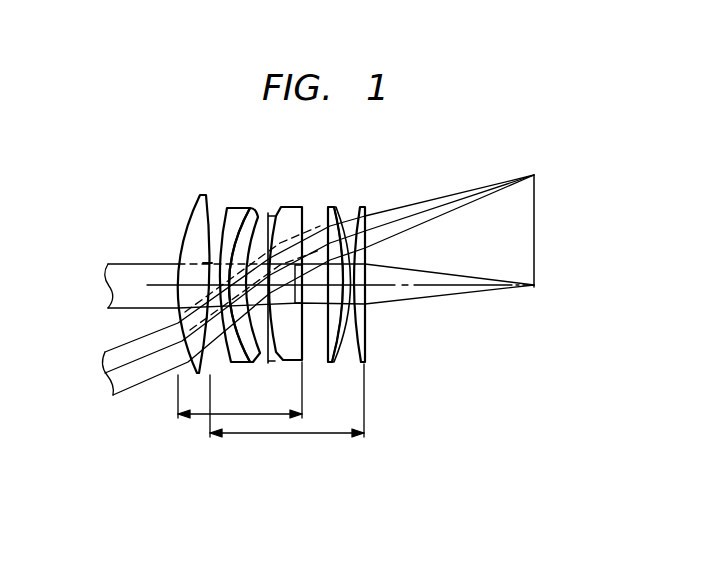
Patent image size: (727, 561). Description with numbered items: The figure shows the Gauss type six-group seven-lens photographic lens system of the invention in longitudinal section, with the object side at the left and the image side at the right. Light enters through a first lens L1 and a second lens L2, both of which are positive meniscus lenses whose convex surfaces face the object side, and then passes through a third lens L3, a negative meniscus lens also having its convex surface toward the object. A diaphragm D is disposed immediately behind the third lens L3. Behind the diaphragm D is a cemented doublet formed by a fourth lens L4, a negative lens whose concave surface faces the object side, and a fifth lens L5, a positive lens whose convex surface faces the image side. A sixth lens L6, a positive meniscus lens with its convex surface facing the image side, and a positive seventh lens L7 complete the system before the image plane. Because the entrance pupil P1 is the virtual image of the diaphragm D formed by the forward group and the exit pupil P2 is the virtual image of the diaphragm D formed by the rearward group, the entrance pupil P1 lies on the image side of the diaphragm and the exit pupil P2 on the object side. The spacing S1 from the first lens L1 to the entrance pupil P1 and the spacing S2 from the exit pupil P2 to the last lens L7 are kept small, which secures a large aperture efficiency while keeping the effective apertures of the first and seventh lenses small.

The first lens L1 is at (197, 205).
The second lens L2 is at (228, 208).
The third lens L3 is at (249, 207).
The diaphragm D is at (270, 212).
The fourth lens L4 is at (291, 211).
The fifth lens L5 is at (323, 209).
The sixth lens L6 is at (337, 209).
The seventh lens L7 is at (366, 209).
The entrance pupil P1 is at (303, 303).
The exit pupil P2 is at (207, 263).
The spacing from the first lens to the entrance pupil S1 is at (240, 390).
The spacing from the exit pupil to the last lens S2 is at (287, 413).